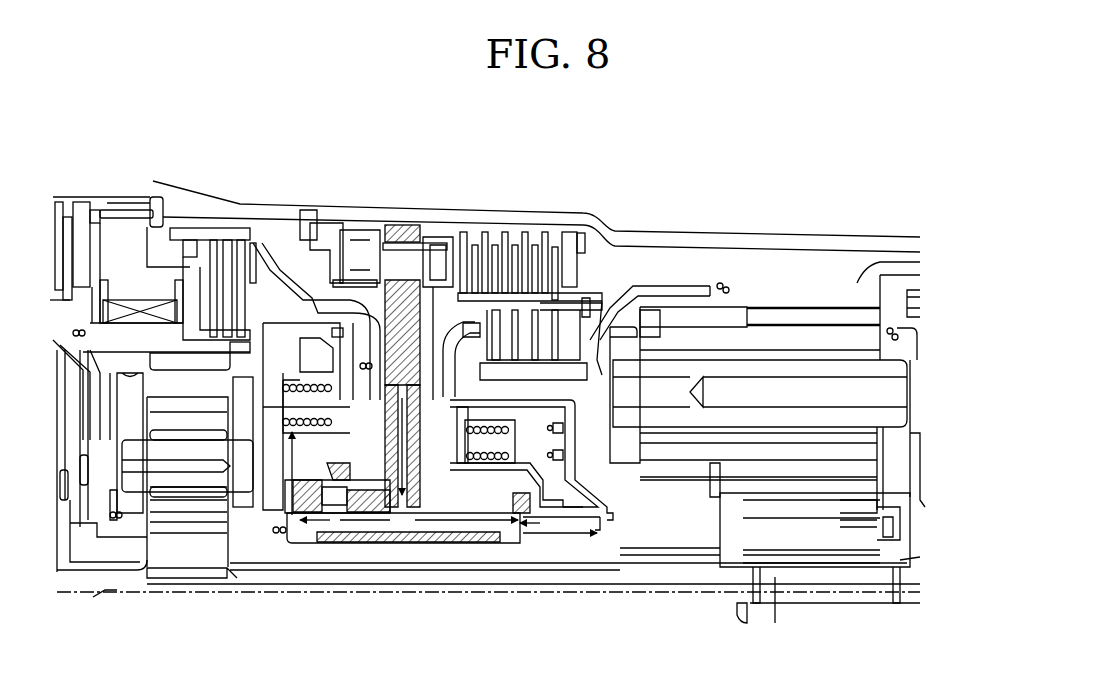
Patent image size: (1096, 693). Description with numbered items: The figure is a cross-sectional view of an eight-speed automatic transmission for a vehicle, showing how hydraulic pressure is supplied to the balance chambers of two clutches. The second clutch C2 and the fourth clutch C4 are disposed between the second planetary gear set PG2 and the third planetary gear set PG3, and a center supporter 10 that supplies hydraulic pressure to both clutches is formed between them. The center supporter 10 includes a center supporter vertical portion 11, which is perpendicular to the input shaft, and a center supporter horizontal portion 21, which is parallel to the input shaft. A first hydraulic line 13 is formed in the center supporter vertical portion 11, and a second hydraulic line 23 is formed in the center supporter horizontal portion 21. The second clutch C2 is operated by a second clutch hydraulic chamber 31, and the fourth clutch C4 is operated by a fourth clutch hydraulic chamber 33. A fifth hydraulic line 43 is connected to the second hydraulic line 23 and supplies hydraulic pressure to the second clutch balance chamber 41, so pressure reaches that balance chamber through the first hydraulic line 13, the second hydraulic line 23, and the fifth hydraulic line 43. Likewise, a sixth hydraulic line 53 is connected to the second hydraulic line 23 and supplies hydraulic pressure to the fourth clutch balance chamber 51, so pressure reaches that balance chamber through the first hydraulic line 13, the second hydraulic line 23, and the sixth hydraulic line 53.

The second clutch C2 is at (185, 263).
The fourth clutch C4 is at (461, 326).
The center supporter 10 is at (400, 221).
The center supporter vertical portion 11 is at (432, 285).
The first hydraulic line 13 is at (400, 378).
The center supporter horizontal portion 21 is at (400, 542).
The second hydraulic line 23 is at (503, 513).
The second clutch hydraulic chamber 31 is at (357, 453).
The fourth clutch hydraulic chamber 33 is at (460, 452).
The second clutch balance chamber 41 is at (313, 483).
The fifth hydraulic line 43 is at (305, 510).
The fourth clutch balance chamber 51 is at (572, 502).
The sixth hydraulic line 53 is at (592, 507).
The second planetary gear set PG2 is at (190, 552).
The third planetary gear set PG3 is at (812, 535).